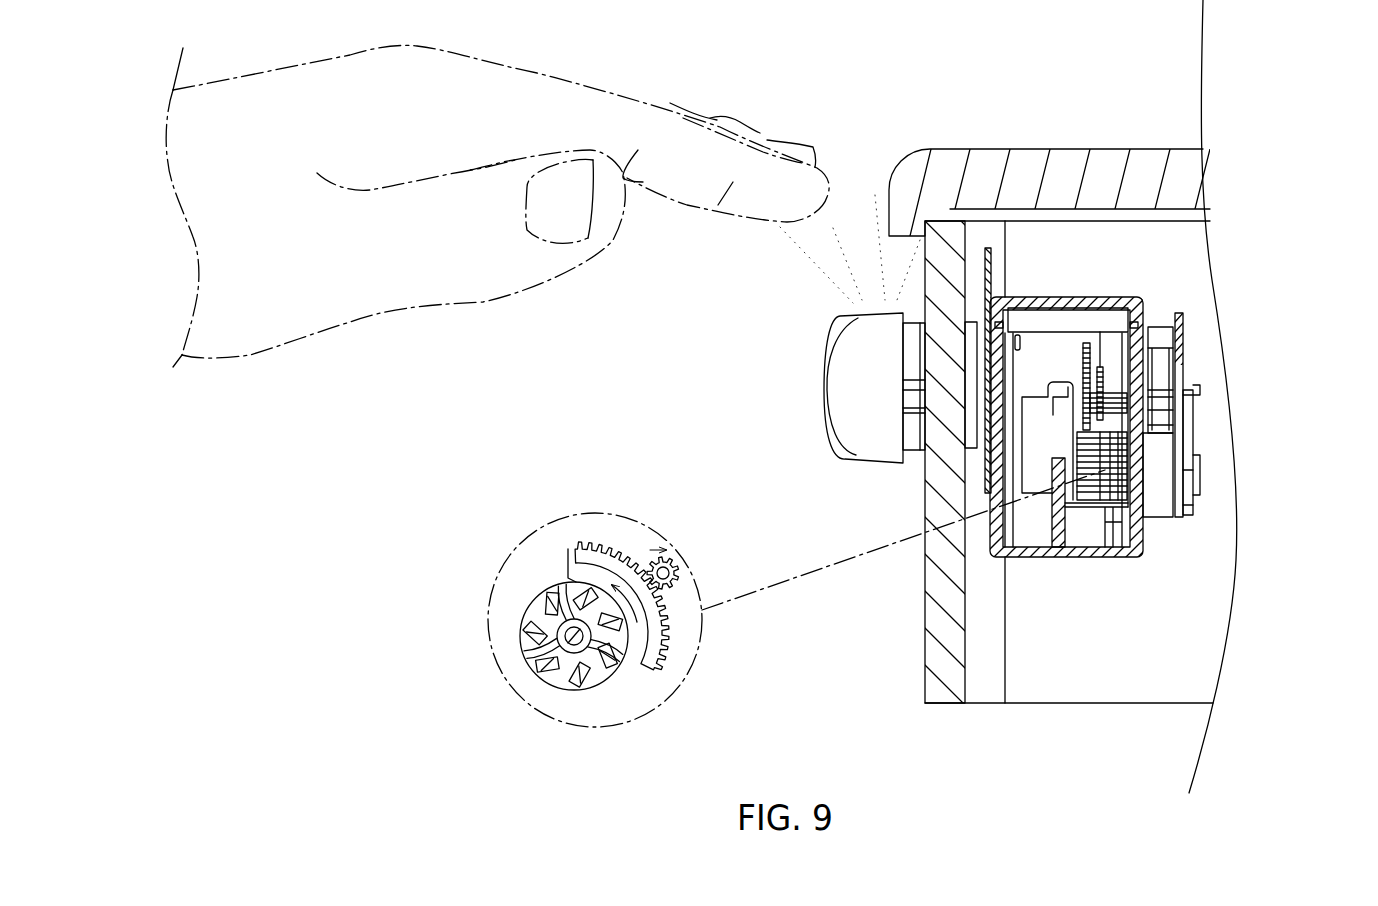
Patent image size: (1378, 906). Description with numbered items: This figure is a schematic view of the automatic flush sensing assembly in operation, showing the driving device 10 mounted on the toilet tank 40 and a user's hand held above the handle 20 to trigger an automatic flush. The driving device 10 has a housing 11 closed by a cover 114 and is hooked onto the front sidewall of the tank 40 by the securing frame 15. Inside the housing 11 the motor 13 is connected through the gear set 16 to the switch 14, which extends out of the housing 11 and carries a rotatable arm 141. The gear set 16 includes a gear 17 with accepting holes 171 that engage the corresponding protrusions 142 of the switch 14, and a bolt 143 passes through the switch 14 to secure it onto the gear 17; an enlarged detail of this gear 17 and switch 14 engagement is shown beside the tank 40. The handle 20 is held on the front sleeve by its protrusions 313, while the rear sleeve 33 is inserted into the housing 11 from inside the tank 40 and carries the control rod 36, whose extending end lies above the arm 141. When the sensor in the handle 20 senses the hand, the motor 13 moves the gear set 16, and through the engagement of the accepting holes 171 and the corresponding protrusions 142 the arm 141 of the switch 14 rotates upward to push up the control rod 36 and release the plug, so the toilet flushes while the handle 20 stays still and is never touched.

The driving device 10 is at (1145, 560).
The housing 11 is at (1097, 555).
The motor 13 is at (1033, 463).
The switch 14 is at (1158, 503).
The arm 141 is at (1193, 420).
The corresponding protrusions 142 is at (533, 620).
The bolt 143 is at (598, 655).
The securing frame 15 is at (1001, 280).
The gear set 16 is at (1058, 500).
The gear 17 is at (587, 545).
The accepting holes 171 is at (547, 657).
The handle 20 is at (822, 395).
The protrusions 313 is at (915, 428).
The rear sleeve 33 is at (1162, 337).
The control rod 36 is at (1183, 328).
The toilet tank 40 is at (925, 638).
The cover 114 is at (1088, 302).